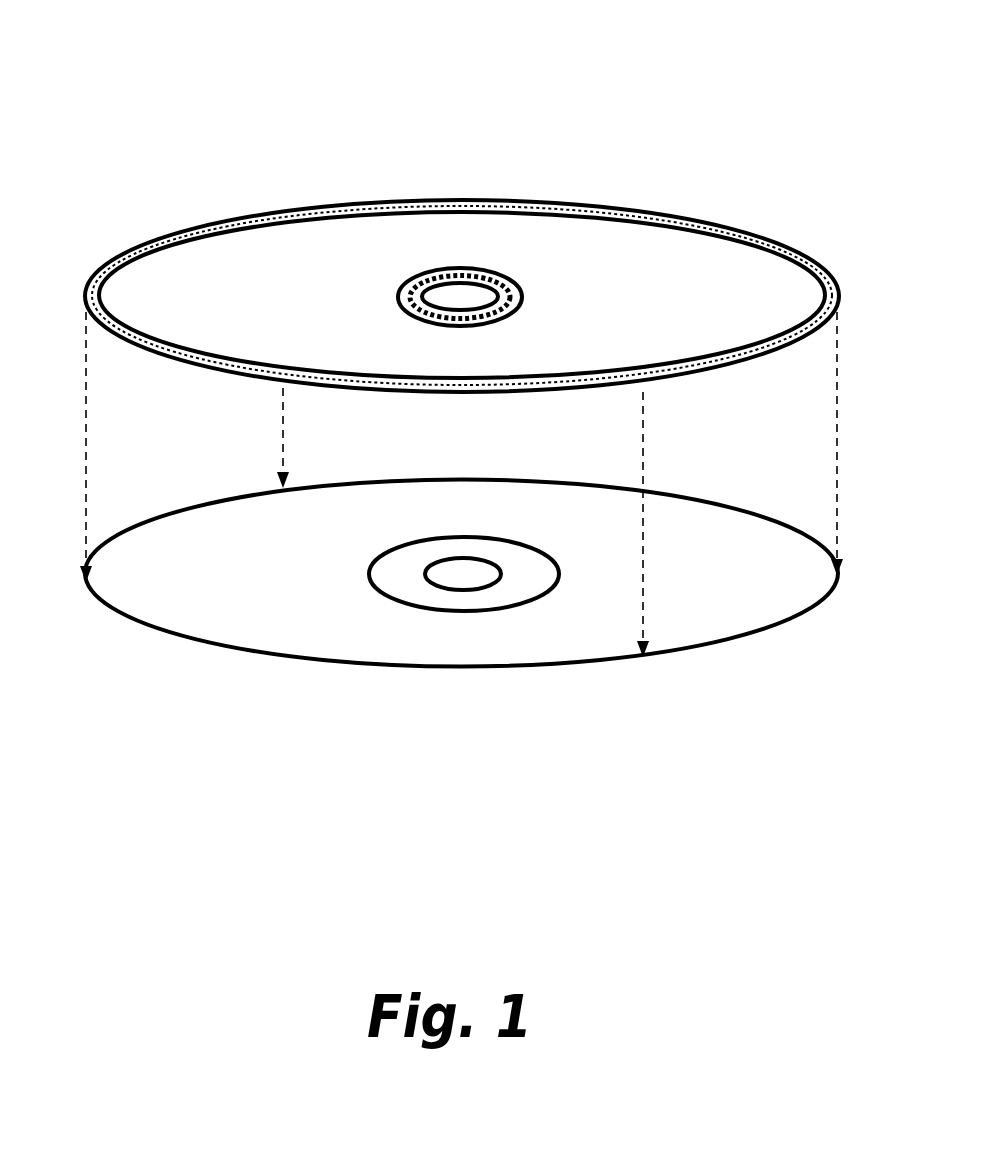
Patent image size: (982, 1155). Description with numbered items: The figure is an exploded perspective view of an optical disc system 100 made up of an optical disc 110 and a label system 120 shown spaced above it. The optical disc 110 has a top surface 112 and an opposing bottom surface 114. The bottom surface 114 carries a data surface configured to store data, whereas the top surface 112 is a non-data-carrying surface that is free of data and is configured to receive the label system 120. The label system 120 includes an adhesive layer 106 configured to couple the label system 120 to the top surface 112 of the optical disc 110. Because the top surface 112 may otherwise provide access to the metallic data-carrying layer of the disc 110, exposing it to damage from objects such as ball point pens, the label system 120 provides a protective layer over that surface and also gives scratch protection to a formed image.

The optical disc system 100 is at (832, 107).
The adhesive layer 106 is at (705, 380).
The label system 120 is at (688, 270).
The top surface 112 is at (120, 505).
The optical disc 110 is at (742, 639).
The bottom surface 114 is at (370, 697).